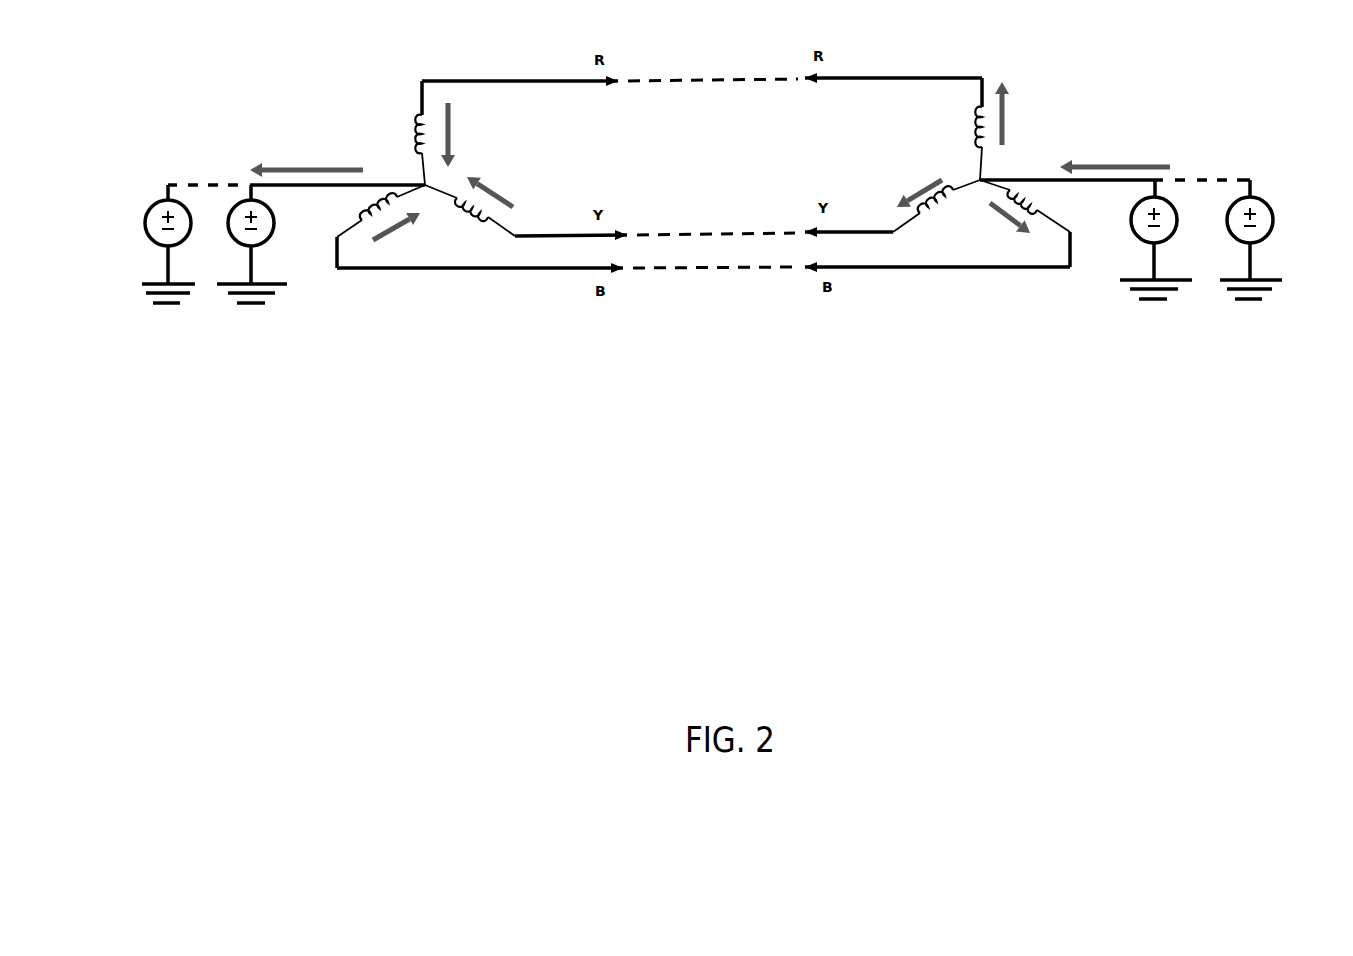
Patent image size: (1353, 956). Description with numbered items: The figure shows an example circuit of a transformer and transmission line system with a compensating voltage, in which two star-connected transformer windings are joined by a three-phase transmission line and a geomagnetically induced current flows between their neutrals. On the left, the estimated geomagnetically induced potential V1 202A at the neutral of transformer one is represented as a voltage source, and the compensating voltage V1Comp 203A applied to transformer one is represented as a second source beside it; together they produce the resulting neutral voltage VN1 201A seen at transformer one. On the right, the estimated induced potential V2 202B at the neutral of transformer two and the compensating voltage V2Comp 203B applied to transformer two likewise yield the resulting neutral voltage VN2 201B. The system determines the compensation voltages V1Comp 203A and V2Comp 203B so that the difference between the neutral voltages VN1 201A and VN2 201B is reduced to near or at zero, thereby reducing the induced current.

The resulting neutral voltage V_N1 201A is at (403, 153).
The resulting neutral voltage V_N2 201B is at (1010, 153).
The estimated geomagnetically induced potential V_1 202A is at (305, 272).
The compensating voltage V_1Comp 203A is at (112, 272).
The estimated geomagnetically induced potential V_2 202B is at (1105, 272).
The compensating voltage V_2Comp 203B is at (1290, 272).